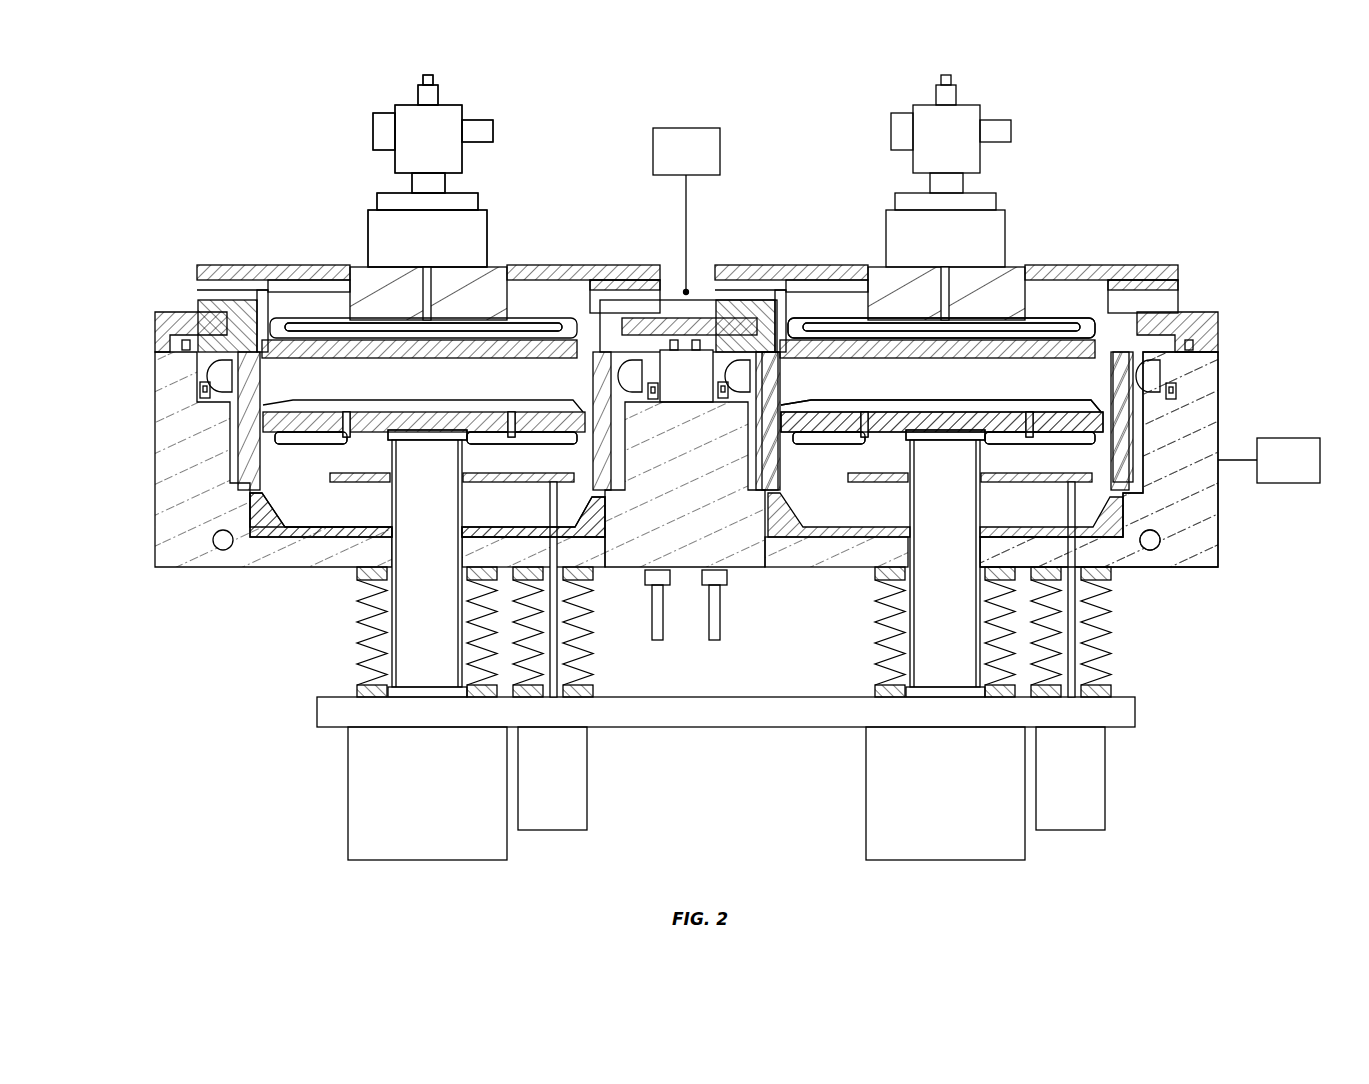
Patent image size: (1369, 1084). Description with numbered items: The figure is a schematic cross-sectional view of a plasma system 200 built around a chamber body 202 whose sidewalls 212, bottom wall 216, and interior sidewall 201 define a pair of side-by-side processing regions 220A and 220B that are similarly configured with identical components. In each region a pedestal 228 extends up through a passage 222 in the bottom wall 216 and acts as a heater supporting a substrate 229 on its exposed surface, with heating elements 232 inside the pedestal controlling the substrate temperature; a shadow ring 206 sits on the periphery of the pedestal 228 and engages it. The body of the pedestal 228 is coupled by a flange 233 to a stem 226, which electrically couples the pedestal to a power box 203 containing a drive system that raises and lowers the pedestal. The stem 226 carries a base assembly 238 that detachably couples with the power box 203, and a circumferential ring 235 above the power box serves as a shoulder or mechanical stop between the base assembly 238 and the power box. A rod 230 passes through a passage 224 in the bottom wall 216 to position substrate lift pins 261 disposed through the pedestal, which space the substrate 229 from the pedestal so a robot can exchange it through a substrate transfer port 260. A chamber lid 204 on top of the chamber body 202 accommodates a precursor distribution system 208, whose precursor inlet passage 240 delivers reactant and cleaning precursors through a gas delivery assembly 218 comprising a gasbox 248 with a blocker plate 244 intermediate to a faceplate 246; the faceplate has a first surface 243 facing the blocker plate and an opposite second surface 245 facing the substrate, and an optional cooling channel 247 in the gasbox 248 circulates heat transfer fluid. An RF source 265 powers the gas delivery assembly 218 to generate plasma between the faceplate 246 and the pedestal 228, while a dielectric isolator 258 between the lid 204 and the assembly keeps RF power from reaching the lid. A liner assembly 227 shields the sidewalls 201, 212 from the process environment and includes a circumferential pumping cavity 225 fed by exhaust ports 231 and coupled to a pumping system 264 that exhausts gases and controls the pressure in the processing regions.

The plasma system 200 is at (1210, 203).
The interior sidewall 201 is at (749, 568).
The chamber body 202 is at (1238, 428).
The power box 203 is at (348, 772).
The chamber lid 204 is at (155, 320).
The shadow ring 206 is at (600, 388).
The precursor distribution system 208 is at (338, 250).
The sidewalls 212 is at (155, 505).
The bottom wall 216 is at (1195, 555).
The gas delivery assembly 218 is at (288, 345).
The processing region 220A is at (426, 405).
The processing region 220B is at (944, 405).
The passage 222 is at (385, 548).
The passage 224 is at (1098, 560).
The circumferential pumping cavity 225 is at (714, 364).
The stem 226 is at (762, 535).
The liner assembly 227 is at (603, 460).
The pedestal 228 is at (384, 455).
The substrate 229 is at (405, 397).
The rod 230 is at (550, 505).
The exhaust ports 231 is at (253, 380).
The heating elements 232 is at (427, 432).
The flange 233 is at (937, 398).
The circumferential ring 235 is at (432, 687).
The base assembly 238 is at (400, 674).
The precursor inlet passage 240 is at (945, 295).
The first surface 243 is at (1085, 345).
The blocker plate 244 is at (1078, 330).
The second surface 245 is at (1100, 353).
The faceplate 246 is at (995, 355).
The cooling channel 247 is at (842, 290).
The gasbox 248 is at (1020, 275).
The dielectric isolator 258 is at (215, 302).
The substrate transfer port 260 is at (300, 447).
The substrate lift pins 261 is at (776, 440).
The pumping system 264 is at (1269, 460).
The RF source 265 is at (686, 211).